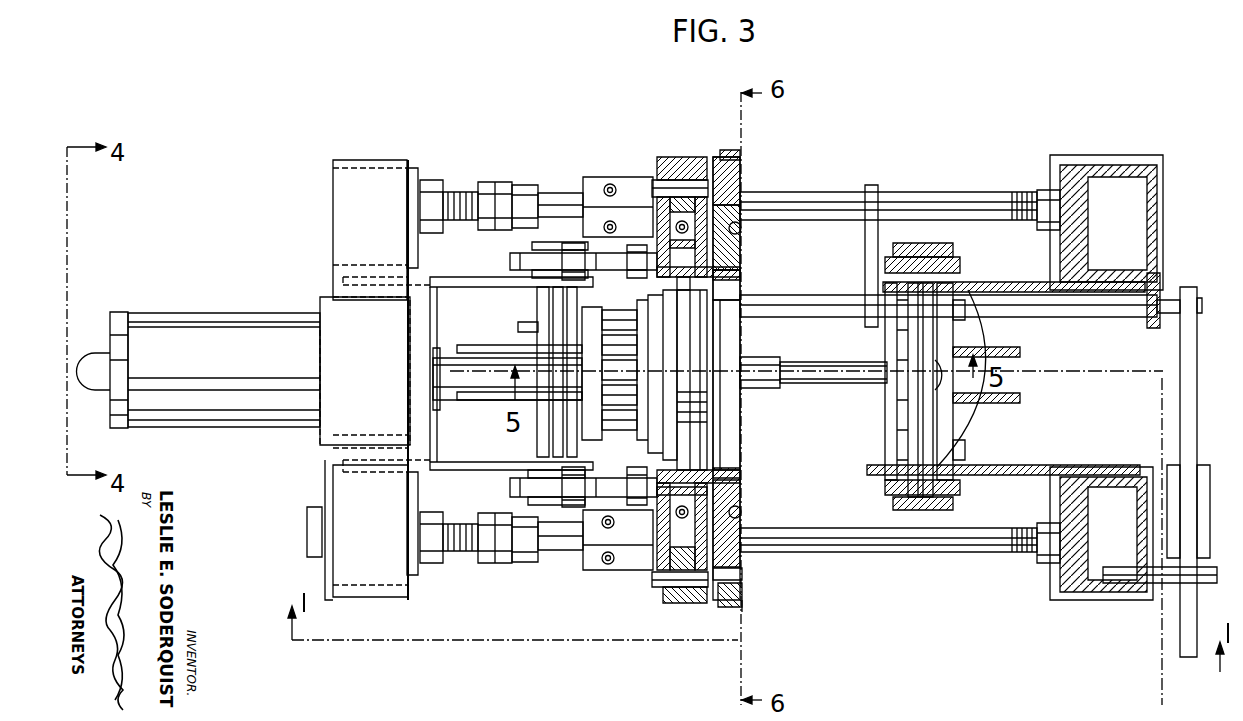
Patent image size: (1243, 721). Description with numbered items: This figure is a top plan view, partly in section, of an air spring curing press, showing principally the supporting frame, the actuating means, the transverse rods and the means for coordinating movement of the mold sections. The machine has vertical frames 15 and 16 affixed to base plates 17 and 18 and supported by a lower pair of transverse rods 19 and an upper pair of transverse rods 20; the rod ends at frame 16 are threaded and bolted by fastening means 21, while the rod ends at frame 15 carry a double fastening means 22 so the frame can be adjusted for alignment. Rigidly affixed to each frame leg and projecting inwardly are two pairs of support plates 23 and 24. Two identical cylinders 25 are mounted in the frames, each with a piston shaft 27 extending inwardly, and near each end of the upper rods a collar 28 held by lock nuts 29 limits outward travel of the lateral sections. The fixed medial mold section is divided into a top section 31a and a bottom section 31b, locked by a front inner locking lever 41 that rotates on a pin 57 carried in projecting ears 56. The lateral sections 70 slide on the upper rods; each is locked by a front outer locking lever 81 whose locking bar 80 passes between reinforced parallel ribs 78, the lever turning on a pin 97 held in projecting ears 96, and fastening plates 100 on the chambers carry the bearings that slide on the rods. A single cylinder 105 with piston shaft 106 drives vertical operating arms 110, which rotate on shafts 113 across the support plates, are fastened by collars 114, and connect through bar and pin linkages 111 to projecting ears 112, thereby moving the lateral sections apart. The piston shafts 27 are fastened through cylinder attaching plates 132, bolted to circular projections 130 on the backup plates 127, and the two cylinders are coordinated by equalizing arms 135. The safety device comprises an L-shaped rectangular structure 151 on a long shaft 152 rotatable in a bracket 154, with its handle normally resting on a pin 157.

The vertical frame 15 is at (345, 470).
The vertical frame 16 is at (1158, 198).
The base plate 17 is at (326, 575).
The base plate 18 is at (1165, 167).
The lower transverse rod 19 is at (925, 212).
The upper transverse rod 20 is at (565, 193).
The fastening means 21 is at (1040, 195).
The double fastening means 22 is at (436, 180).
The support plate 23 is at (440, 285).
The support plate 24 is at (1032, 293).
The cylinder 25 is at (222, 418).
The piston shaft 27 is at (457, 382).
The collar 28 is at (532, 185).
The lock nuts 29 is at (490, 182).
The top section 31a is at (741, 276).
The bottom section 31b is at (741, 480).
The front inner locking lever 41 is at (720, 598).
The projecting ears 56 is at (744, 603).
The pin 57 is at (743, 580).
The lateral section 70 is at (695, 278).
The reinforced parallel ribs 78 is at (700, 157).
The locking bar 80 is at (656, 180).
The front outer locking lever 81 is at (680, 603).
The projecting ears 96 is at (663, 598).
The pin 97 is at (655, 580).
The fastening plate 100 is at (590, 562).
The cylinder 105 is at (760, 388).
The piston shaft 106 is at (822, 380).
The vertical operating arm 110 is at (520, 264).
The bar and pin linkage 111 is at (608, 272).
The projecting ear 112 is at (650, 272).
The shaft 113 is at (915, 430).
The collar 114 is at (545, 253).
The backup plate 127 is at (643, 310).
The circular projection 130 is at (615, 426).
The cylinder attaching plate 132 is at (590, 440).
The equalizing arm 135 is at (498, 346).
The L-shaped rectangular structure 151 is at (870, 232).
The long shaft 152 is at (1095, 313).
The bracket 154 is at (1152, 288).
The pin 157 is at (1205, 585).